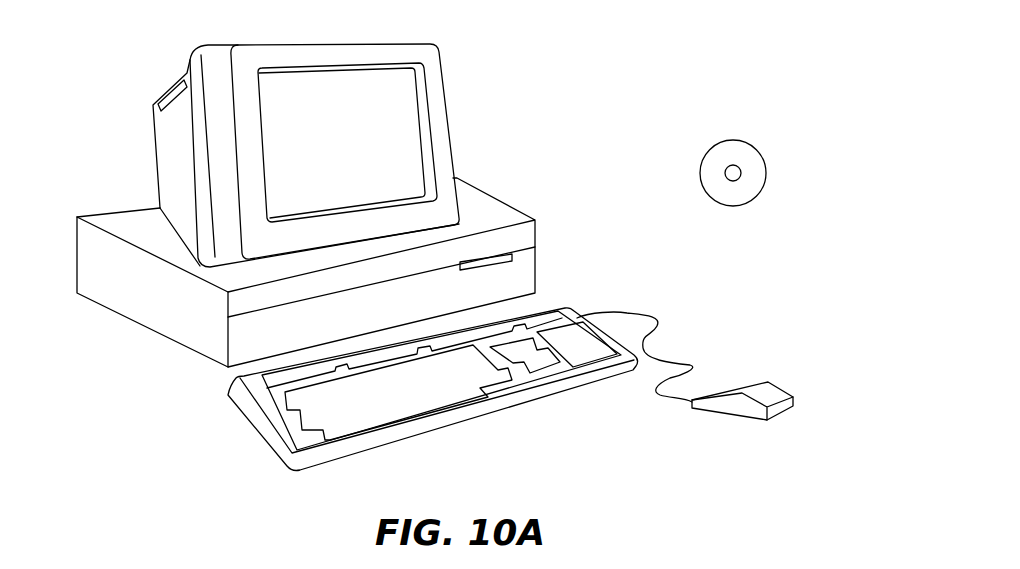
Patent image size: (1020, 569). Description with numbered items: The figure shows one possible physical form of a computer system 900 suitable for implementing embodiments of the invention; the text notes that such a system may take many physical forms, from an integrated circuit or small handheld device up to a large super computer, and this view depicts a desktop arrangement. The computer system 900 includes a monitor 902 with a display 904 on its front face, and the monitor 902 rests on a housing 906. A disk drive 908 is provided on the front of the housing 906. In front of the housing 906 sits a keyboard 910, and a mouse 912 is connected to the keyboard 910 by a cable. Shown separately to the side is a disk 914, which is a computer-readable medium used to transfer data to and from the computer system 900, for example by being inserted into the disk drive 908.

The computer system 900 is at (655, 36).
The monitor 902 is at (455, 152).
The display 904 is at (413, 105).
The housing 906 is at (193, 266).
The disk drive 908 is at (512, 252).
The keyboard 910 is at (440, 428).
The mouse 912 is at (757, 385).
The disk 914 is at (747, 143).